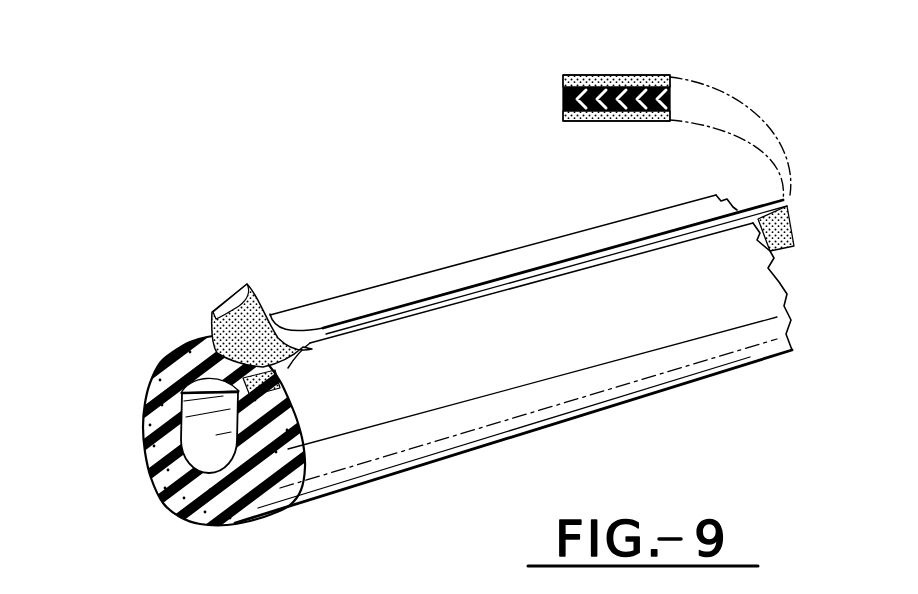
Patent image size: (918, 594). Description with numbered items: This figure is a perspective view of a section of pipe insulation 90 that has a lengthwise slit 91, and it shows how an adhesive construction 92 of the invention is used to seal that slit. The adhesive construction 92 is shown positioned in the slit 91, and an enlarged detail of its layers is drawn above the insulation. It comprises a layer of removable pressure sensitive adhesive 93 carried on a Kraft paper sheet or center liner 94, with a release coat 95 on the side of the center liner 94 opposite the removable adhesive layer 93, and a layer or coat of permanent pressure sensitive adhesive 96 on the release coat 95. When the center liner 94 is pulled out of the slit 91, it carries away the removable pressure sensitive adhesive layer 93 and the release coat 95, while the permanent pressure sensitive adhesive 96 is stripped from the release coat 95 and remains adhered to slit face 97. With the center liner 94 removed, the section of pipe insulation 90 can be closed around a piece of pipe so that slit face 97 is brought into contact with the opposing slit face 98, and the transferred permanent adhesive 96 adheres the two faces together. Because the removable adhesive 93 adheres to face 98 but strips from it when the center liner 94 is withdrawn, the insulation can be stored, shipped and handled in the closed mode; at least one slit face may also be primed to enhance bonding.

The section of pipe insulation 90 is at (157, 465).
The slit 91 is at (456, 303).
The adhesive construction 92 is at (270, 314).
The removable pressure sensitive adhesive layer 93 is at (612, 76).
The center liner 94 is at (566, 96).
The release coat 95 is at (565, 104).
The permanent pressure sensitive adhesive layer 96 is at (609, 122).
The slit face 97 is at (236, 388).
The slit face 98 is at (284, 395).